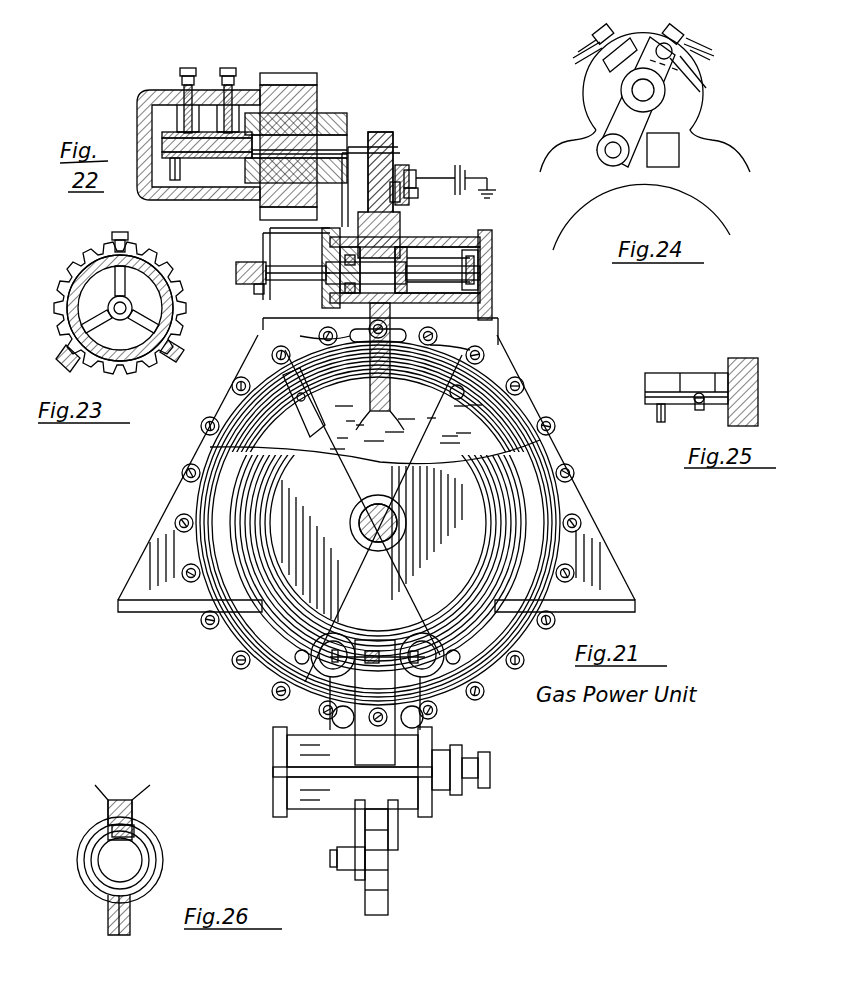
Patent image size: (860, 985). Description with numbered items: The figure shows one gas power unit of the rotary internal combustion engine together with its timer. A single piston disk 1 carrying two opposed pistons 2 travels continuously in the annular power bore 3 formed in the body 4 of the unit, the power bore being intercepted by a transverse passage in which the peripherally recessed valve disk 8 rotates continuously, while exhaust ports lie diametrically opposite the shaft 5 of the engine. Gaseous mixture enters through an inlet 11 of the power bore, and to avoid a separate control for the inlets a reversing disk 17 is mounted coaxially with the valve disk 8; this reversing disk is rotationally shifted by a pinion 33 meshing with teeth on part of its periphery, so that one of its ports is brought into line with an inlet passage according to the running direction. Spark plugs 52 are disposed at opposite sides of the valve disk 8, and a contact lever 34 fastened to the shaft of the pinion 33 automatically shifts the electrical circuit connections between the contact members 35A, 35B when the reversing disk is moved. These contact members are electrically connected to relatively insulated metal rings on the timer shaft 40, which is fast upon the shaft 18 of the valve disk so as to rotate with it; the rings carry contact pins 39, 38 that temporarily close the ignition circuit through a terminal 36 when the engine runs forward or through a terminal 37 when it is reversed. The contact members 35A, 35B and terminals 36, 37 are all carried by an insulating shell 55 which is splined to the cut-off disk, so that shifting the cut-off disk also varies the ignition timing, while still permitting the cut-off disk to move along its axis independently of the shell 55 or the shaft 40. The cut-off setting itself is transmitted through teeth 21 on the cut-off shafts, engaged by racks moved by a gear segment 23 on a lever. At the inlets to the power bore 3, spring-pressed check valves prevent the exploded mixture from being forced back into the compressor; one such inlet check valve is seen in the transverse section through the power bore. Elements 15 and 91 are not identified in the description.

In FIG. 21, the piston disk 1 is at (338, 464).
In FIG. 21, the piston 2 is at (272, 362).
In FIG. 21, the power bore 3 is at (505, 405).
In FIG. 26, the power bore 3 is at (160, 858).
In FIG. 21, the body 4 is at (590, 540).
In FIG. 21, the shaft 5 is at (390, 520).
In FIG. 22, the valve disk 8 is at (388, 138).
In FIG. 22, the inlet 11 is at (322, 318).
In FIG. 21, the inlet 11 is at (325, 343).
In FIG. 21, the bearing yoke 15 is at (460, 700).
In FIG. 22, the reversing disk 17 is at (400, 245).
In FIG. 22, the shaft of the valve disk 18 is at (478, 232).
In FIG. 21, the teeth 21 is at (488, 775).
In FIG. 22, the gear segment 23 is at (166, 63).
In FIG. 22, the pinion 33 is at (407, 168).
In FIG. 24, the contact lever 34 is at (648, 128).
In FIG. 22, the contact member 35A is at (231, 68).
In FIG. 24, the contact member 35A is at (688, 34).
In FIG. 22, the contact member 35B is at (190, 62).
In FIG. 24, the contact member 35B is at (621, 34).
In FIG. 22, the terminal 36 is at (246, 284).
In FIG. 23, the terminal 36 is at (60, 365).
In FIG. 21, the terminal 36 is at (410, 330).
In FIG. 22, the terminal 37 is at (258, 292).
In FIG. 23, the terminal 37 is at (178, 362).
In FIG. 22, the contact pin 38 is at (181, 170).
In FIG. 23, the contact pin 38 is at (60, 314).
In FIG. 25, the contact pin 38 is at (657, 414).
In FIG. 22, the contact pin 39 is at (403, 218).
In FIG. 23, the contact pin 39 is at (175, 296).
In FIG. 25, the contact pin 39 is at (697, 410).
In FIG. 22, the timer shaft 40 is at (300, 140).
In FIG. 25, the timer shaft 40 is at (750, 392).
In FIG. 21, the spark plug 52 is at (462, 392).
In FIG. 22, the insulating shell 55 is at (137, 100).
In FIG. 21, the valve fitting 91 is at (468, 348).
In FIG. 26, the valve fitting 91 is at (140, 820).